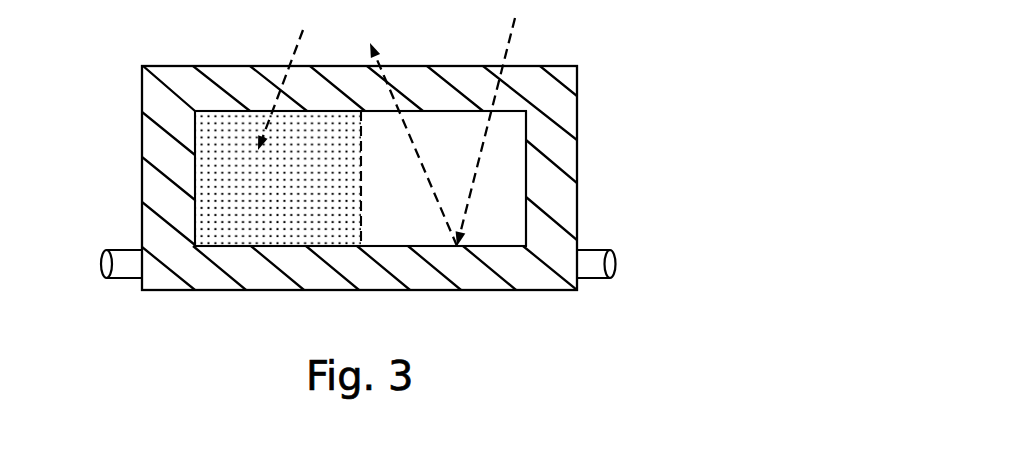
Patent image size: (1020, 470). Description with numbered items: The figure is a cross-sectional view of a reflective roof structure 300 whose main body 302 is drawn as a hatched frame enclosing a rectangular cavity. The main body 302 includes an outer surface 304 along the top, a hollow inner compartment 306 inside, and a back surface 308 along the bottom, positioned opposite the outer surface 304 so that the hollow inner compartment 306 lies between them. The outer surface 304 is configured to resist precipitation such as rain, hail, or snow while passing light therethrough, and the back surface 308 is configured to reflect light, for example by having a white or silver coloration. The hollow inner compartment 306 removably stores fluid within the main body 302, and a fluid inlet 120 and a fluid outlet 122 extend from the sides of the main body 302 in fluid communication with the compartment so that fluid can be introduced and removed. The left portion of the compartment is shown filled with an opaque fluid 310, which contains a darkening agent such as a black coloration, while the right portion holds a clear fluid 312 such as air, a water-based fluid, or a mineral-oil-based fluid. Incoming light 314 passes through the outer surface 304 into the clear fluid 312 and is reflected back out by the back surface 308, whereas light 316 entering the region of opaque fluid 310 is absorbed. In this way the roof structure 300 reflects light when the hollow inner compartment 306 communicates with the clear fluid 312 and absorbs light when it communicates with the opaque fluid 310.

The roof structure 300 is at (606, 46).
The main body 302 is at (128, 102).
The outer surface 304 is at (174, 66).
The hollow inner compartment 306 is at (526, 164).
The back surface 308 is at (390, 247).
The opaque fluid 310 is at (298, 183).
The clear fluid 312 is at (486, 203).
The light 314 is at (508, 50).
The light ray 316 is at (296, 53).
The fluid inlet 120 is at (130, 279).
The fluid outlet 122 is at (592, 279).